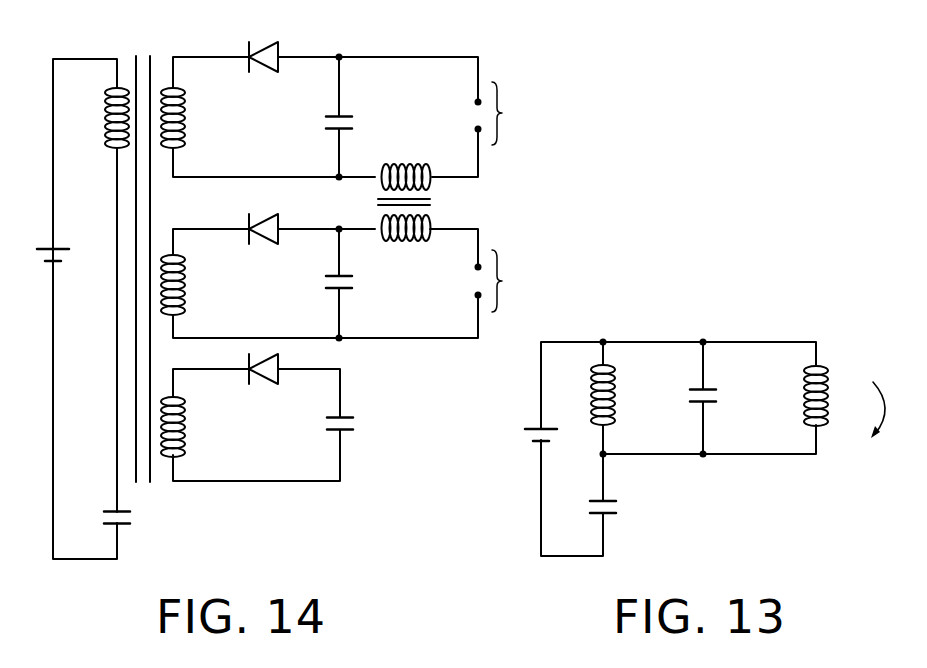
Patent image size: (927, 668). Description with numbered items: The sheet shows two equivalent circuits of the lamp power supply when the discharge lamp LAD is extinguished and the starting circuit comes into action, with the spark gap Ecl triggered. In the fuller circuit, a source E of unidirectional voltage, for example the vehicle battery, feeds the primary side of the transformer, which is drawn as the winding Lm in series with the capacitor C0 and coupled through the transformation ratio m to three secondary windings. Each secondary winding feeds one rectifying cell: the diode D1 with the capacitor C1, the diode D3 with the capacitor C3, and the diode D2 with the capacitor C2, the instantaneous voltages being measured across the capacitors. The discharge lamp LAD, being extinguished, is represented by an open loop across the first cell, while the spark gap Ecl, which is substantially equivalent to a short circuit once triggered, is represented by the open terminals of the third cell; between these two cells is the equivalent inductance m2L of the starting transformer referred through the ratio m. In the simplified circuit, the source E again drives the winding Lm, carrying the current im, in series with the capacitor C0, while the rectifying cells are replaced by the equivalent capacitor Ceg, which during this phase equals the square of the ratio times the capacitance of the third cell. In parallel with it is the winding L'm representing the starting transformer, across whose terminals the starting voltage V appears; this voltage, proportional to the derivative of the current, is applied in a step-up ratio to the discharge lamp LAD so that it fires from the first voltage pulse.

In FIG. 14, the transformation ratio m is at (141, 251).
In FIG. 14, the winding Lm is at (95, 118).
In FIG. 13, the winding Lm is at (583, 395).
In FIG. 14, the source of unidirectional voltage E is at (44, 256).
In FIG. 13, the source of unidirectional voltage E is at (529, 440).
In FIG. 14, the diode D1 is at (282, 63).
In FIG. 14, the capacitor C1 is at (322, 122).
In FIG. 14, the discharge lamp LAD is at (515, 113).
In FIG. 14, the diode D3 is at (281, 237).
In FIG. 14, the capacitor C3 is at (321, 285).
In FIG. 14, the equivalent inductance m2L is at (404, 239).
In FIG. 14, the spark gap Ecl is at (511, 281).
In FIG. 14, the diode D2 is at (259, 386).
In FIG. 14, the capacitor C2 is at (359, 425).
In FIG. 14, the capacitor C0 is at (137, 522).
In FIG. 13, the capacitor C0 is at (621, 510).
In FIG. 13, the current im is at (634, 368).
In FIG. 13, the equivalent capacitor Ceg is at (730, 399).
In FIG. 13, the winding Lm' L'm is at (838, 396).
In FIG. 13, the starting voltage V is at (891, 410).